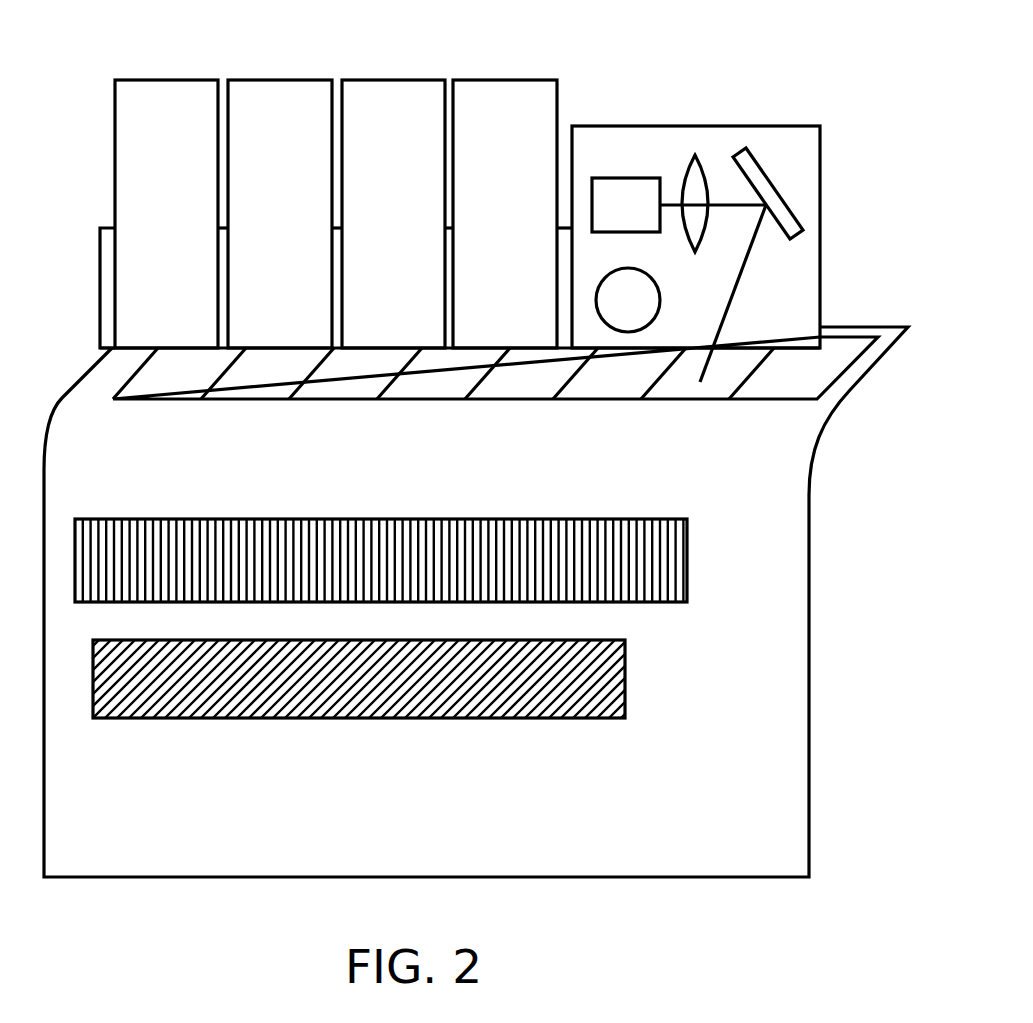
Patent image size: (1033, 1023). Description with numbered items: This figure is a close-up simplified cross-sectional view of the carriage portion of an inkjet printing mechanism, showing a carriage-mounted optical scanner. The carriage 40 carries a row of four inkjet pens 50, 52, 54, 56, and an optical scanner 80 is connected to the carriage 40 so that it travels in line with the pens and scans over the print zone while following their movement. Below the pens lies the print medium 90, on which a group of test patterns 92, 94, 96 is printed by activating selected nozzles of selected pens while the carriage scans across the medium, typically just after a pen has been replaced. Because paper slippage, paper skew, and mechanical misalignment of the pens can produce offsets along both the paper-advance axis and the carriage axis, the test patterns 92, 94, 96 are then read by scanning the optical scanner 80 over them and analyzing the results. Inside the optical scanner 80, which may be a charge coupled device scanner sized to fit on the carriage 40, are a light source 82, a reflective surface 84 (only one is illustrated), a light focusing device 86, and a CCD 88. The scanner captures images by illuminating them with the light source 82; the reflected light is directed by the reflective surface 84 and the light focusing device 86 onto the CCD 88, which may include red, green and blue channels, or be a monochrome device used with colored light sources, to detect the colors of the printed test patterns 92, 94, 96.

The carriage 40 is at (100, 318).
The pen 50 is at (489, 227).
The pen 52 is at (377, 227).
The pen 54 is at (264, 227).
The pen 56 is at (151, 227).
The optical scanner 80 is at (595, 126).
The light source 82 is at (700, 382).
The reflective surface 84 is at (778, 189).
The light focusing device 86 is at (695, 155).
The CCD 88 is at (610, 219).
The print medium 90 is at (428, 835).
The test pattern 92 is at (656, 399).
The test pattern 94 is at (687, 552).
The test pattern 96 is at (625, 692).